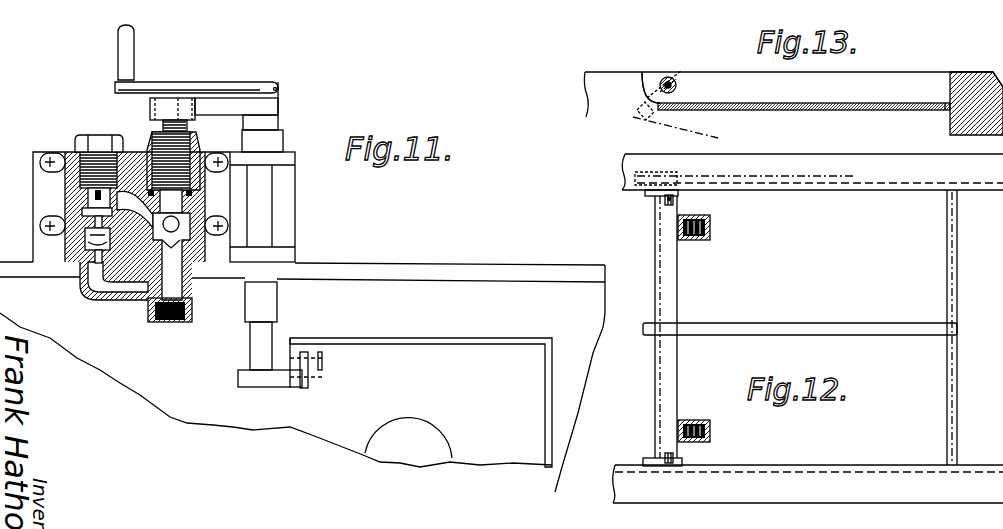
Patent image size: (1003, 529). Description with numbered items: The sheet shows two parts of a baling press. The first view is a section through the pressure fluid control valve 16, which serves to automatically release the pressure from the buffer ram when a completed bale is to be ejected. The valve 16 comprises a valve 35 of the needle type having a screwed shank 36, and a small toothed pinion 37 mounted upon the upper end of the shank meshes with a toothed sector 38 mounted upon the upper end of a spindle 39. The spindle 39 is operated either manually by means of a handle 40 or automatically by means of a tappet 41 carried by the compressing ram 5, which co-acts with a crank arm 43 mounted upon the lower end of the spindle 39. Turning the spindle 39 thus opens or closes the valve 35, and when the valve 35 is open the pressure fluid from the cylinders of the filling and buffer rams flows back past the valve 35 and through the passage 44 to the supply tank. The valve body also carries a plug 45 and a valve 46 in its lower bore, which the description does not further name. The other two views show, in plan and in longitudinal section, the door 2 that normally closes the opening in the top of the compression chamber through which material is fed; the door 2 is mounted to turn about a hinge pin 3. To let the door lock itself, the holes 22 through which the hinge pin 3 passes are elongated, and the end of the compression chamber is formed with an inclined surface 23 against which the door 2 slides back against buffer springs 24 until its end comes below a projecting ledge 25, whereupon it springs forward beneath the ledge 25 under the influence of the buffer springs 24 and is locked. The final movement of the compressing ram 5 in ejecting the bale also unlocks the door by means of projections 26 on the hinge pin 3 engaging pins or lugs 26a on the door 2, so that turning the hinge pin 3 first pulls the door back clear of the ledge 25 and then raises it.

In FIG. 13, the door 2 is at (815, 105).
In FIG. 12, the door 2 is at (940, 268).
In FIG. 13, the hinge pin 3 is at (663, 78).
In FIG. 12, the hinge pin 3 is at (662, 283).
In FIG. 11, the compressing ram 5 is at (398, 432).
In FIG. 11, the valve 16 is at (70, 145).
In FIG. 13, the holes 22 is at (680, 88).
In FIG. 13, the inclined surface 23 is at (950, 73).
In FIG. 12, the buffer springs 24 is at (695, 238).
In FIG. 13, the projecting ledge 25 is at (950, 98).
In FIG. 12, the projecting ledge 25 is at (947, 232).
In FIG. 13, the projections 26 is at (672, 77).
In FIG. 12, the projections 26 is at (670, 200).
In FIG. 13, the pins or lugs 26a is at (666, 76).
In FIG. 12, the pins or lugs 26a is at (667, 198).
In FIG. 11, the valve 35 is at (200, 236).
In FIG. 11, the screwed shank 36 is at (157, 136).
In FIG. 11, the toothed pinion 37 is at (163, 105).
In FIG. 11, the toothed sector 38 is at (222, 106).
In FIG. 11, the spindle 39 is at (270, 208).
In FIG. 11, the handle 40 is at (172, 89).
In FIG. 11, the tappet 41 is at (307, 377).
In FIG. 11, the crank arm 43 is at (268, 378).
In FIG. 11, the passage 44 is at (168, 322).
In FIG. 11, the plug 45 is at (82, 208).
In FIG. 11, the valve 46 is at (82, 258).